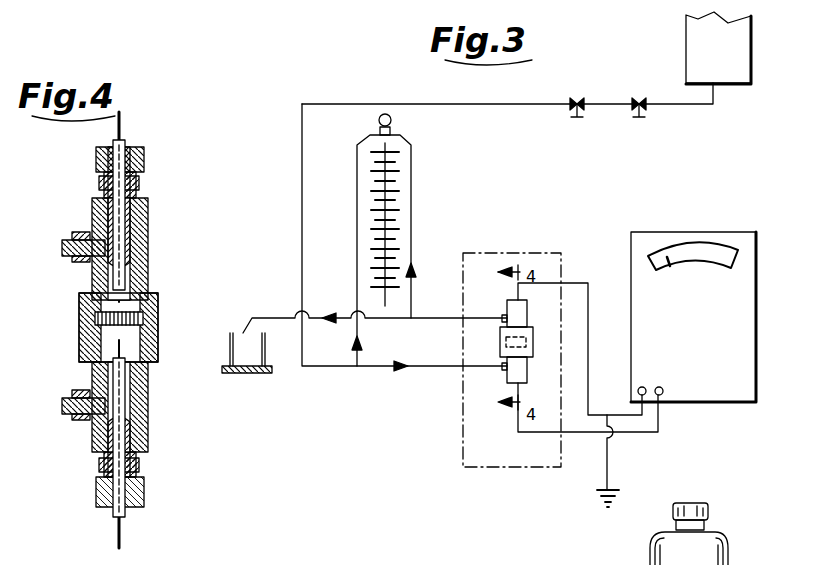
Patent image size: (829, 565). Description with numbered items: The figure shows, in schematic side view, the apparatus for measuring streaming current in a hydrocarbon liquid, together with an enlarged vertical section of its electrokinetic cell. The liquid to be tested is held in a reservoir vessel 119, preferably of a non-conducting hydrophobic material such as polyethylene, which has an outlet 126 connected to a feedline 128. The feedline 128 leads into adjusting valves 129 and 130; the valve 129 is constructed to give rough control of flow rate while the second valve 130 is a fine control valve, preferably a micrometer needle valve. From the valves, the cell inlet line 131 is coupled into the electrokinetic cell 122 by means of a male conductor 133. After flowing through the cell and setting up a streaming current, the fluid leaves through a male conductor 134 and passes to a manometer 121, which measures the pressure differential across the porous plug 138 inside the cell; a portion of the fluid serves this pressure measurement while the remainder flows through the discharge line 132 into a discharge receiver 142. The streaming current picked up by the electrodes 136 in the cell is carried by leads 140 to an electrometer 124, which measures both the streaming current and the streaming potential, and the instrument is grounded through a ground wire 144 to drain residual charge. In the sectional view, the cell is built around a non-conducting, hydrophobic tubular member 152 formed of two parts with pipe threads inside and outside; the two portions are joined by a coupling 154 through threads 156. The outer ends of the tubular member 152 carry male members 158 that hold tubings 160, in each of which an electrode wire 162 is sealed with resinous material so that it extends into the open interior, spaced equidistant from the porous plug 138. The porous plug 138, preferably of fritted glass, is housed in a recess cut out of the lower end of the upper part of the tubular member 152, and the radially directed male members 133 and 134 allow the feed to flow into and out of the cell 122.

In FIG. 3, the reservoir vessel 119 is at (703, 42).
In FIG. 3, the manometer 121 is at (412, 180).
In FIG. 3, the electrokinetic cell 122 is at (506, 300).
In FIG. 3, the electrometer 124 is at (664, 232).
In FIG. 3, the outlet 126 is at (717, 88).
In FIG. 3, the feedline 128 is at (716, 106).
In FIG. 3, the adjusting valve 129 is at (644, 113).
In FIG. 3, the fine control valve 130 is at (569, 112).
In FIG. 3, the cell inlet line 131 is at (340, 103).
In FIG. 3, the discharge line 132 is at (264, 318).
In FIG. 4, the male conductor 133 is at (72, 420).
In FIG. 4, the male conductor 134 is at (74, 234).
In FIG. 3, the electrode 136 is at (523, 322).
In FIG. 3, the porous plug 138 is at (533, 347).
In FIG. 4, the porous plug 138 is at (159, 308).
In FIG. 3, the leads 140 is at (588, 283).
In FIG. 3, the discharge receiver 142 is at (250, 374).
In FIG. 3, the ground wire 144 is at (608, 468).
In FIG. 4, the tubular member 152 is at (148, 256).
In FIG. 4, the coupling 154 is at (80, 340).
In FIG. 4, the threads 156 is at (158, 298).
In FIG. 4, the male members 158 is at (141, 183).
In FIG. 4, the tubings 160 is at (146, 160).
In FIG. 4, the electrode wire 162 is at (121, 130).